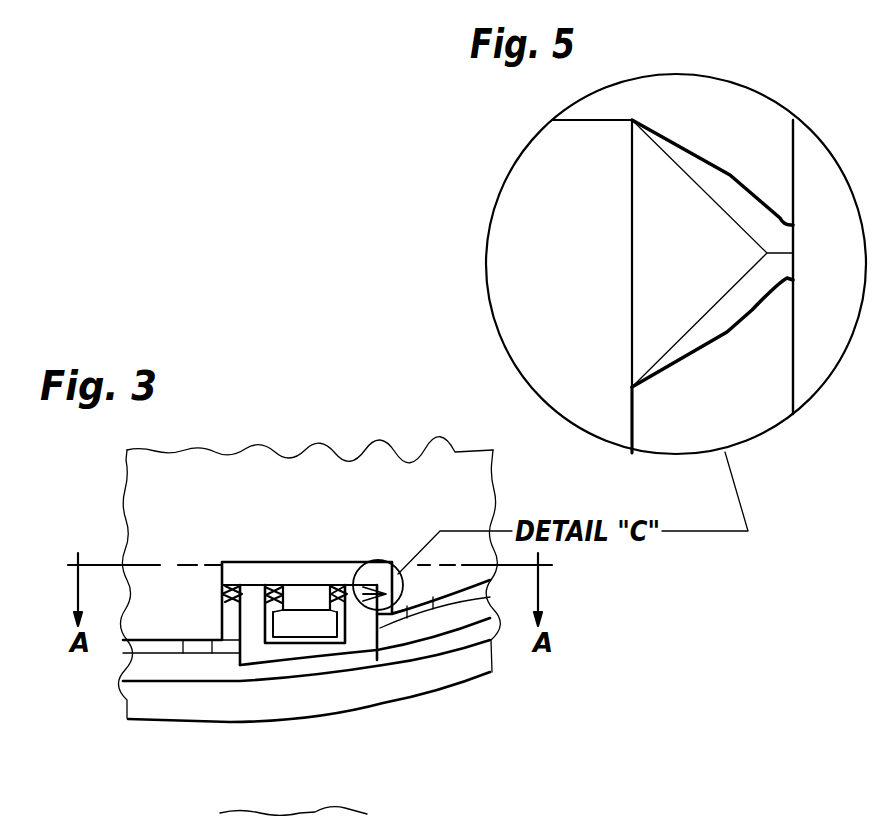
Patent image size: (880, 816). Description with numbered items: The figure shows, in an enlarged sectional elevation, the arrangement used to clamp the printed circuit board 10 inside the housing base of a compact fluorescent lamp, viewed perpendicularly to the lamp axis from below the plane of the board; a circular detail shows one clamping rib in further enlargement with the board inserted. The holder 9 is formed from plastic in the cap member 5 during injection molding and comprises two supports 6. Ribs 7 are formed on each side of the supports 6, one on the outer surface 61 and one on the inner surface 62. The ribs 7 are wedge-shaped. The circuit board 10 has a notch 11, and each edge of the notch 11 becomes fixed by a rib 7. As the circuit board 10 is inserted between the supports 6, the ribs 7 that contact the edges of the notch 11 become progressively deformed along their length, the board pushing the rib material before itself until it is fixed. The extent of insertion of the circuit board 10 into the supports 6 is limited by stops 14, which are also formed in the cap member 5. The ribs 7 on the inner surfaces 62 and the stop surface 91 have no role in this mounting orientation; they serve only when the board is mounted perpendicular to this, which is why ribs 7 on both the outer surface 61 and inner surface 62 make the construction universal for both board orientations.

In FIG. 3, the cap member 5 is at (377, 688).
In FIG. 3, the supports 6 is at (250, 625).
In FIG. 5, the supports 6 is at (533, 322).
In FIG. 3, the ribs 7 is at (248, 583).
In FIG. 5, the ribs 7 is at (690, 283).
In FIG. 3, the holder 9 is at (262, 643).
In FIG. 3, the printed circuit board 10 is at (318, 457).
In FIG. 5, the printed circuit board 10 is at (823, 353).
In FIG. 3, the notch 11 is at (230, 562).
In FIG. 5, the notch 11 is at (790, 152).
In FIG. 3, the stops 14 is at (193, 650).
In FIG. 3, the outer surface 61 is at (220, 657).
In FIG. 5, the outer surface 61 is at (635, 414).
In FIG. 3, the inner surface 62 is at (273, 616).
In FIG. 3, the stop surface 91 is at (305, 586).